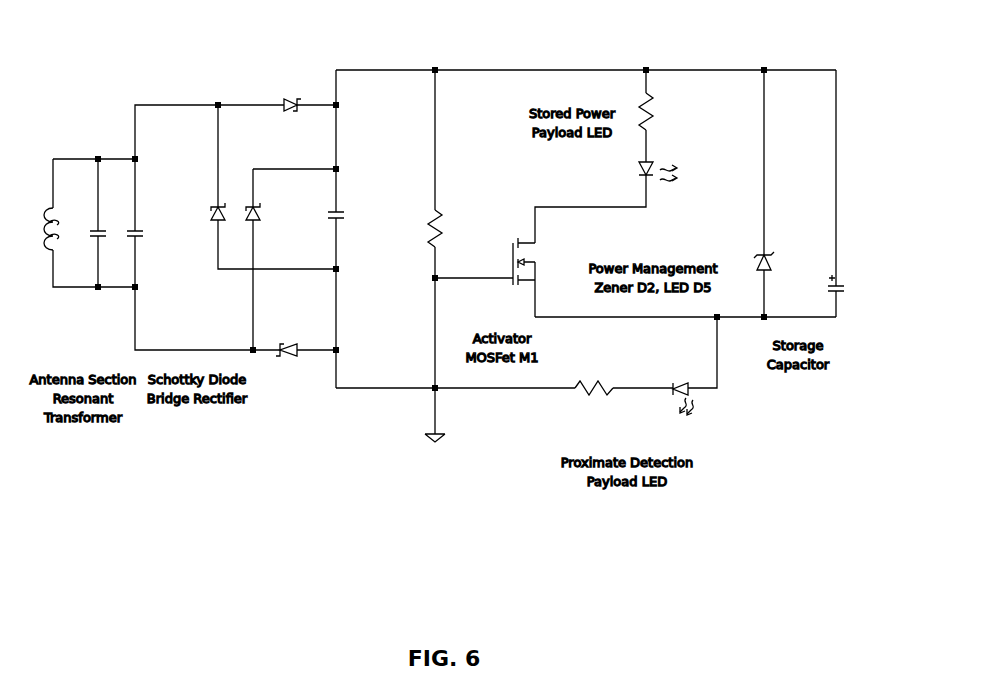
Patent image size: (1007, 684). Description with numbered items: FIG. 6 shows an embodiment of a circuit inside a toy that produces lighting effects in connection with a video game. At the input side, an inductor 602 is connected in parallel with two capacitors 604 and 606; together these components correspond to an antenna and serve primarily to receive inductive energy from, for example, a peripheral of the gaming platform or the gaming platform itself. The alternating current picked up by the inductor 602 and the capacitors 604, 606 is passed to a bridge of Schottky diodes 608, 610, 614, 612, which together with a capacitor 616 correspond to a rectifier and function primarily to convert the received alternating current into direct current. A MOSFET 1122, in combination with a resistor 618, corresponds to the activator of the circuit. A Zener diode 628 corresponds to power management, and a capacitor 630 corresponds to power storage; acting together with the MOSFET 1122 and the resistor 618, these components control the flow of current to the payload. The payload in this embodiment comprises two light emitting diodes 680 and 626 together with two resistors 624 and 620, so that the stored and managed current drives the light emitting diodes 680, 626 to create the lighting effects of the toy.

The inductor 602 is at (60, 215).
The capacitor 604 is at (106, 236).
The capacitor 606 is at (145, 238).
The Schottky diode 608 is at (220, 205).
The Schottky diode 610 is at (257, 222).
The Schottky diode 612 is at (283, 100).
The Schottky diode 614 is at (296, 360).
The capacitor 616 is at (345, 219).
The resistor 618 is at (432, 215).
The resistor 620 is at (657, 95).
The resistor 624 is at (583, 397).
The light emitting diode 626 is at (690, 400).
The Zener diode 628 is at (768, 253).
The capacitor 630 is at (826, 292).
The light emitting diode 680 is at (678, 162).
The activator MOSFET M1 1122 is at (517, 285).